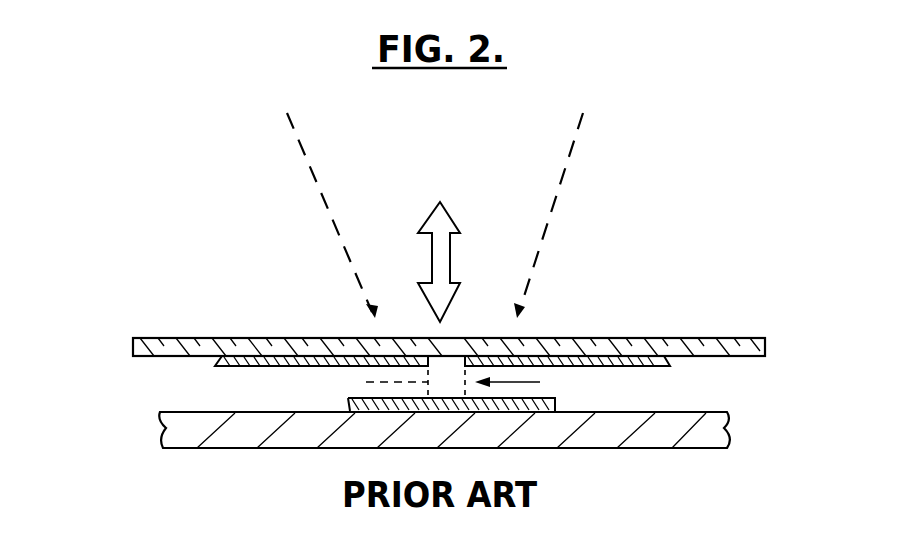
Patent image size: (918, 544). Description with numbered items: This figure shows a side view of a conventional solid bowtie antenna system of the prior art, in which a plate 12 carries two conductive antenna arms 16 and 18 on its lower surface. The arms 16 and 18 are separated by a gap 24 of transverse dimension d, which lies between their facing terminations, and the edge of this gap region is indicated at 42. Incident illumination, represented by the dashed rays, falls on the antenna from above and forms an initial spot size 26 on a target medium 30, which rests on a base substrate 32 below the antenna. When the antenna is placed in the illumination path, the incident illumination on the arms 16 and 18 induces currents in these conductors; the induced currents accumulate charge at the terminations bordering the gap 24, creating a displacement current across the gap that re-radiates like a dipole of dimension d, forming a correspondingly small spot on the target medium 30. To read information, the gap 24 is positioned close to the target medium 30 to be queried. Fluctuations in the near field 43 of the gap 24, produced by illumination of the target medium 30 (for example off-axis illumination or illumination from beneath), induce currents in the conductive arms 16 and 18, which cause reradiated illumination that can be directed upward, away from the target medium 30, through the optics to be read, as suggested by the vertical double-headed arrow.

The plate / substrate 12 is at (688, 338).
The antenna arm 16 is at (213, 366).
The antenna arm 18 is at (655, 364).
The gap 24 is at (450, 352).
The initial spot size 26 is at (522, 312).
The target medium 30 is at (555, 402).
The base substrate 32 is at (608, 437).
The gap edge 42 is at (377, 385).
The near field 43 is at (524, 384).